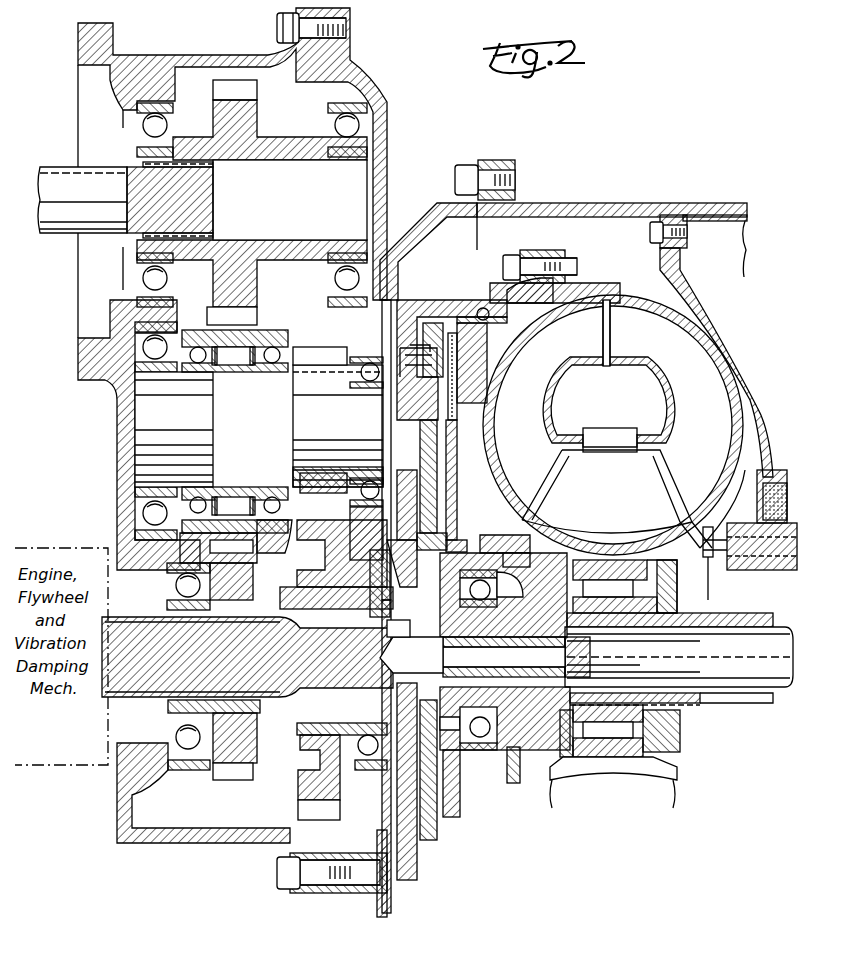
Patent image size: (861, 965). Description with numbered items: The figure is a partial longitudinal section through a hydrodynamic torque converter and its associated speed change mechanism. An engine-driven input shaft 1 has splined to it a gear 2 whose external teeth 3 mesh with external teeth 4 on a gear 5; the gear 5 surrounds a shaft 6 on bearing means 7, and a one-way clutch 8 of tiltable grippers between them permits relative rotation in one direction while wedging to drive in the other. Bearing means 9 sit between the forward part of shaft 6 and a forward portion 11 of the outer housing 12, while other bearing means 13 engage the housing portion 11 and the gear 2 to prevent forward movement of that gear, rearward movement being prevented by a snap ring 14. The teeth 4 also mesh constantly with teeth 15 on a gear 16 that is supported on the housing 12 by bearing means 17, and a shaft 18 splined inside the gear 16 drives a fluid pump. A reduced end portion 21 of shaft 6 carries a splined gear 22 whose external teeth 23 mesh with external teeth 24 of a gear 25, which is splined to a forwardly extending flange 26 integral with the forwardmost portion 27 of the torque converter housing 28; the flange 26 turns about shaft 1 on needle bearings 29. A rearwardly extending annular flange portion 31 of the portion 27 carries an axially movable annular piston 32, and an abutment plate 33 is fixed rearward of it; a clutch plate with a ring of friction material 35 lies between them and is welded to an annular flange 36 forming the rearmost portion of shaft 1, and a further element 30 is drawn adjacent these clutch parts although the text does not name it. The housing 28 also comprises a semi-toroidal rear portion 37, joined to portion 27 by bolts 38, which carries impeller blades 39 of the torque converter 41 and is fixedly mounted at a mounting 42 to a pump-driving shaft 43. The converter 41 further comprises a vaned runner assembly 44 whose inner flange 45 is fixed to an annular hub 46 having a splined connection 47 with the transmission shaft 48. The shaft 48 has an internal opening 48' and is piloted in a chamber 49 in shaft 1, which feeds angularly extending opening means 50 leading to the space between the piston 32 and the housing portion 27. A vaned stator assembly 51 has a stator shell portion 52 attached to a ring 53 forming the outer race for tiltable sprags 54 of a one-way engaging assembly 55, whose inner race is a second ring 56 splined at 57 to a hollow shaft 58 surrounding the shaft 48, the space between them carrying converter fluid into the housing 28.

The input shaft 1 is at (140, 690).
The gear 2 is at (252, 753).
The external teeth 3 is at (222, 775).
The external teeth 4 is at (270, 587).
The gear 5 is at (268, 530).
The shaft 6 is at (150, 412).
The bearing means 7 is at (197, 365).
The one-way clutch 8 is at (235, 365).
The bearing means 9 is at (148, 515).
The forward portion of outer housing 11 is at (122, 462).
The outer housing 12 is at (178, 55).
The bearing means 13 is at (176, 590).
The snap ring 14 is at (270, 651).
The teeth 15 is at (250, 88).
The gear 16 is at (250, 290).
The bearing means 17 is at (137, 126).
The shaft 18 is at (60, 228).
The reduced end portion 21 is at (372, 416).
The gear 22 is at (318, 380).
The external teeth 23 is at (317, 358).
The external teeth 24 is at (347, 843).
The gear 25 is at (298, 797).
The forwardly extending flange 26 is at (330, 605).
The forwardmost portion of torque converter housing 27 is at (425, 302).
The torque converter housing 28 is at (485, 291).
The needle bearings 29 is at (330, 700).
The plate 30 is at (486, 517).
The annular flange portion 31 is at (440, 705).
The annular piston 32 is at (433, 832).
The abutment plate 33 is at (480, 348).
The ring of friction material 35 is at (475, 383).
The annular flange 36 is at (483, 765).
The rear portion of torque converter housing 37 is at (700, 322).
The bolts 38 is at (575, 258).
The impeller blades 39 is at (712, 413).
The torque converter 41 is at (625, 395).
The bolt 42 is at (710, 586).
The shaft 43 is at (782, 596).
The vaned runner assembly 44 is at (530, 441).
The inner flange 45 is at (500, 528).
The annular hub 46 is at (532, 670).
The splined connection 47 is at (482, 665).
The transmission shaft 48 is at (679, 680).
The longitudinally extending opening 48' is at (620, 657).
The chamber 49 is at (420, 655).
The angularly extending opening means 50 is at (398, 628).
The vaned stator assembly 51 is at (618, 479).
The stator shell portion 52 is at (682, 535).
The ring 53 is at (612, 565).
The tiltable sprags 54 is at (598, 757).
The one-way engaging assembly 55 is at (622, 752).
The second ring 56 is at (680, 725).
The spline 57 is at (640, 625).
The hollow shaft 58 is at (755, 700).